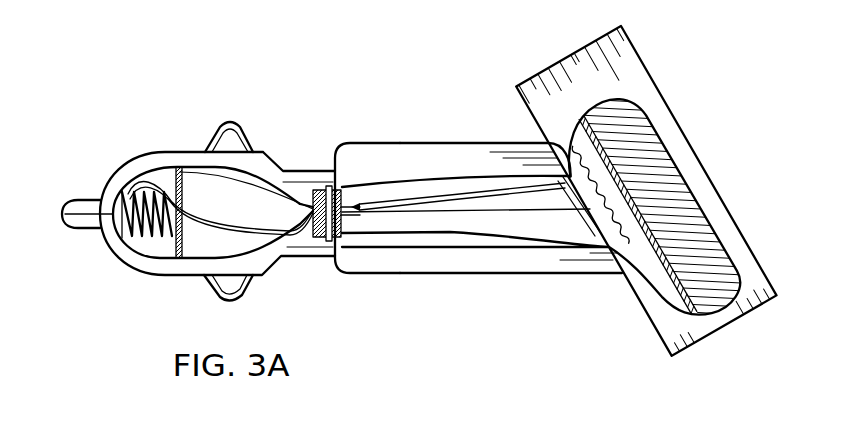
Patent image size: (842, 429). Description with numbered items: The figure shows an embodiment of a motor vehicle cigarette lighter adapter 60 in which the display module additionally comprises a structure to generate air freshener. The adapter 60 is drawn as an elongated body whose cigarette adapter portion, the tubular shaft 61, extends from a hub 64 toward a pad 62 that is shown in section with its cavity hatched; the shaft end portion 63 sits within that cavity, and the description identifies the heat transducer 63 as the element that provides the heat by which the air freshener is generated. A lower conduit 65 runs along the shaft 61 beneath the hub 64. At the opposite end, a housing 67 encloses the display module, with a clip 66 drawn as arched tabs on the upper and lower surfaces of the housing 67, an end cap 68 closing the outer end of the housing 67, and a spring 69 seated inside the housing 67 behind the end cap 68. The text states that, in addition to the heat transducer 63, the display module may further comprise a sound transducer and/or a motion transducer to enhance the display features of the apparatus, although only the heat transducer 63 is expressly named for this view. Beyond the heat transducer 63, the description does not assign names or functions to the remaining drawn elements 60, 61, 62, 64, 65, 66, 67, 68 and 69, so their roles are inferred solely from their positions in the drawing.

The illuminating instrument assembly 60 is at (740, 119).
The tubular shaft 61 is at (458, 150).
The pad 62 is at (632, 52).
The heat transducer 63 is at (602, 248).
The hub 64 is at (407, 195).
The lower conduit 65 is at (400, 233).
The clip 66 is at (238, 128).
The housing 67 is at (153, 151).
The end cap 68 is at (67, 212).
The spring 69 is at (122, 252).